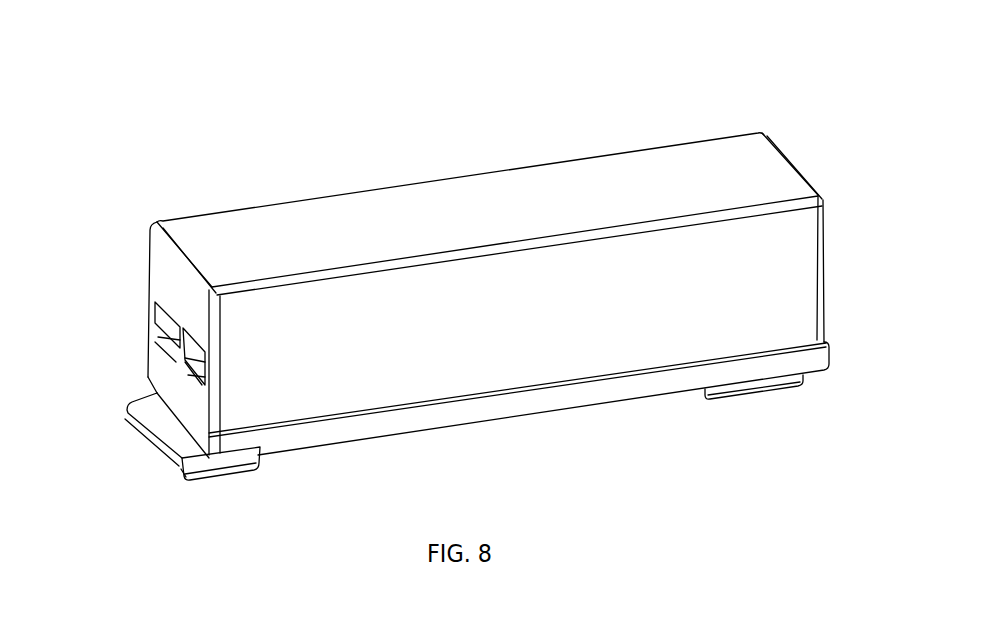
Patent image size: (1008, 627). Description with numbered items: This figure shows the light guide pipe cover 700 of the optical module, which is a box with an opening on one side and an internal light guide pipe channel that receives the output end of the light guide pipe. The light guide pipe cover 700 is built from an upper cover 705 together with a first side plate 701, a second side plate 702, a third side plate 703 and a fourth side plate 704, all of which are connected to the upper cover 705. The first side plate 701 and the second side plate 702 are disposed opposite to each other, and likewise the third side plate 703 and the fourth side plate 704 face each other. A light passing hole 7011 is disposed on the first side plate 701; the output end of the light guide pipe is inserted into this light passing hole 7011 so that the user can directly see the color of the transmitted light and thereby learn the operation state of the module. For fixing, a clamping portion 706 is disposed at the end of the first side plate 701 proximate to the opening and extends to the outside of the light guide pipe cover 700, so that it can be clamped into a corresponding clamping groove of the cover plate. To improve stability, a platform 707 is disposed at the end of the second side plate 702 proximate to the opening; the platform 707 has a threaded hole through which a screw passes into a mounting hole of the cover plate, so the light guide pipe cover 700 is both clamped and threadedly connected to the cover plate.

The light guide pipe cover 700 is at (70, 65).
The first side plate 701 is at (164, 270).
The light passing hole 7011 is at (163, 315).
The second side plate 702 is at (824, 248).
The third side plate 703 is at (540, 352).
The fourth side plate 704 is at (602, 153).
The upper cover 705 is at (433, 210).
The clamping portion 706 is at (171, 432).
The platform 707 is at (760, 382).